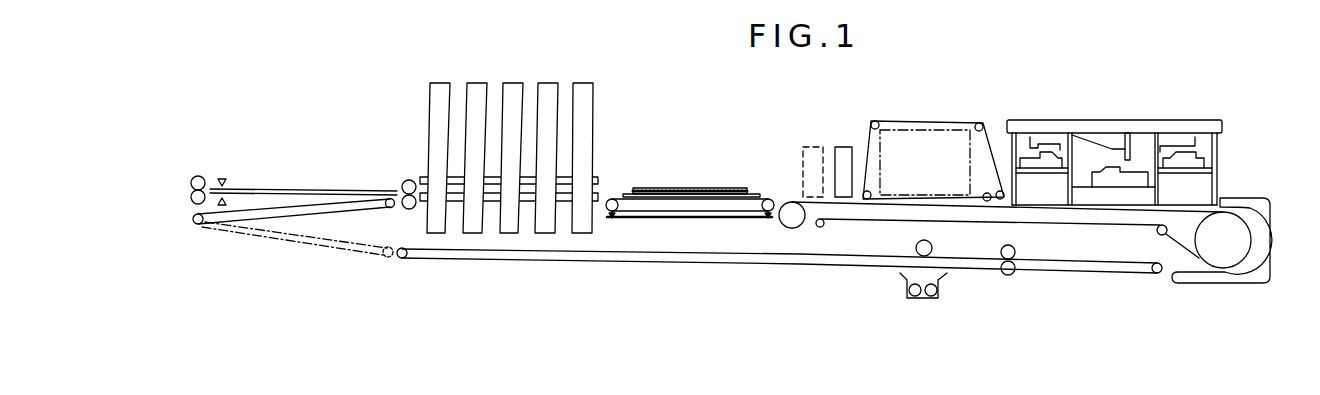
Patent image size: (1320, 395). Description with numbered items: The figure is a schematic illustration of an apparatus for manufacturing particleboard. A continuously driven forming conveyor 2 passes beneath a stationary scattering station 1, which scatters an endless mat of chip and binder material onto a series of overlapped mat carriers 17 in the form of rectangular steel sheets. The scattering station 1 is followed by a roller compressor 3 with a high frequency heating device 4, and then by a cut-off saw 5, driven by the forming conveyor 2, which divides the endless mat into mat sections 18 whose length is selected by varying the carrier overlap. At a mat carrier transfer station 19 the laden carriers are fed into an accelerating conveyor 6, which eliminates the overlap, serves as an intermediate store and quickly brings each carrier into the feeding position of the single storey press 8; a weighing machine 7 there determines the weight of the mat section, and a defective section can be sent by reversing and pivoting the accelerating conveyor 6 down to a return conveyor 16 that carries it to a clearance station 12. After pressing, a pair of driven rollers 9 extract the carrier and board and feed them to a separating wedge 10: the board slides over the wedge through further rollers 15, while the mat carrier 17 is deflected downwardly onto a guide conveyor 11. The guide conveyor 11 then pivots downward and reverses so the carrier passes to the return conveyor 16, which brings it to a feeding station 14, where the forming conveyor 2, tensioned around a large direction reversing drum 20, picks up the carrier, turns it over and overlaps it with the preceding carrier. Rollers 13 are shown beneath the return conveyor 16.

The scattering station 1 is at (1124, 119).
The forming conveyor 2 is at (1063, 222).
The roller compressor 3 is at (987, 136).
The high frequency heating device 4 is at (918, 147).
The cut-off saw 5 is at (842, 156).
The accelerating conveyor 6 is at (663, 203).
The weighing machine 7 is at (717, 219).
The single storey press 8 is at (516, 79).
The pair of driven rollers 9 is at (410, 178).
The separating wedge 10 is at (317, 185).
The guide conveyor 11 is at (318, 216).
The clearance station 12 is at (922, 300).
The drive rollers 13 is at (1007, 276).
The feeding station 14 is at (1212, 286).
The further rollers 15 is at (198, 174).
The return conveyor 16 is at (787, 268).
The mat carrier 17 is at (627, 192).
The mat section 18 is at (690, 187).
The mat carrier transfer station 19 is at (776, 198).
The direction reversing drum 20 is at (1237, 258).